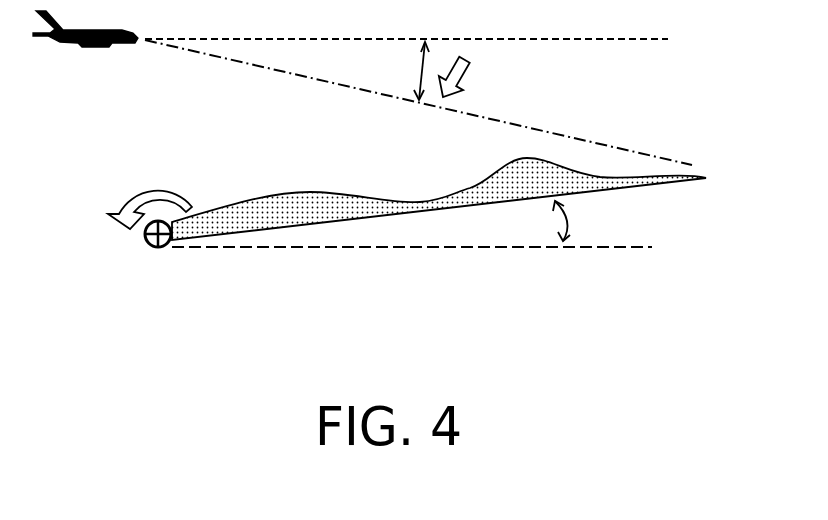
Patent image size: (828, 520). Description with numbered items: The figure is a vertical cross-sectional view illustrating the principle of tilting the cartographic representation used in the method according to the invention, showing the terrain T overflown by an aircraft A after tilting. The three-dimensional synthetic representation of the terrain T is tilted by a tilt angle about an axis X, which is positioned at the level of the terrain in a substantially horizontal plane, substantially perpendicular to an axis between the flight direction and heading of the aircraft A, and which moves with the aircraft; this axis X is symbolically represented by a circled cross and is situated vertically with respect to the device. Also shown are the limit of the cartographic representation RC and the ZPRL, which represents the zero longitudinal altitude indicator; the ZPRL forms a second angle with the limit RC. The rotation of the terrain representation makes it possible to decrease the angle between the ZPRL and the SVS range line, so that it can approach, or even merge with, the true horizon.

The aircraft A is at (68, 46).
The zero longitudinal altitude indicator ZPRL is at (608, 42).
The limit of the cartographic representation RC is at (290, 78).
The terrain T is at (658, 182).
The axis X is at (158, 248).